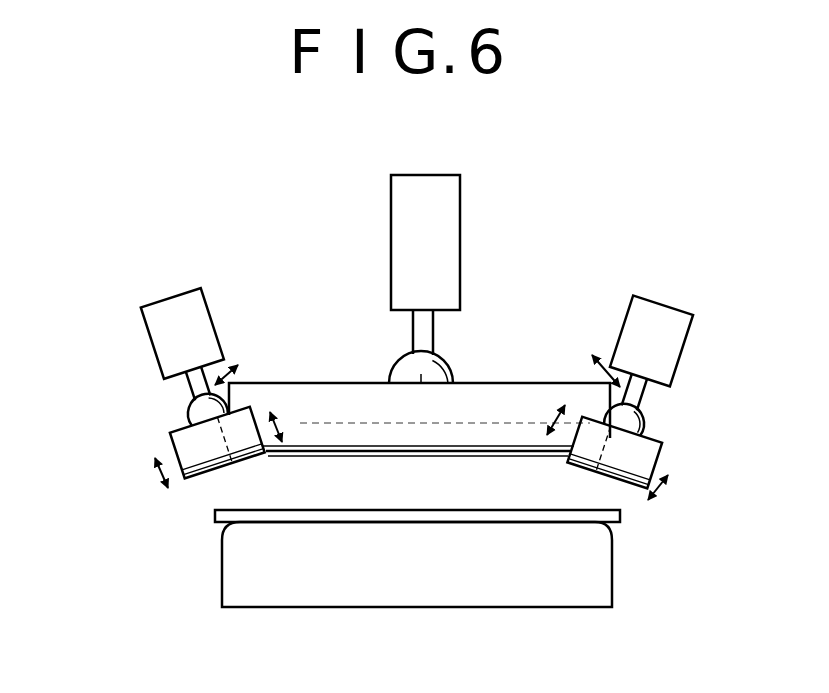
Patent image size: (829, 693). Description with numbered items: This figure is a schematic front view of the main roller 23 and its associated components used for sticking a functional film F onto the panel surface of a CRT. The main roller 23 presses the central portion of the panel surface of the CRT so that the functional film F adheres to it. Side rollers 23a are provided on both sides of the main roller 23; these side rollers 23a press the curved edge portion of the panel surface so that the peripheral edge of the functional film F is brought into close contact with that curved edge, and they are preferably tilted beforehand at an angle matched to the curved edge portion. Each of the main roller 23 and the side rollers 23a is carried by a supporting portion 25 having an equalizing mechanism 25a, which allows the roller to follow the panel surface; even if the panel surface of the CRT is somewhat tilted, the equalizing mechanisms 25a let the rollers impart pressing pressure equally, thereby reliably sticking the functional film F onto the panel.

The pressing cylinder 25 is at (438, 217).
The equalizing mechanism 25a is at (431, 368).
The main roller 23 is at (525, 407).
The side roller 23a is at (195, 437).
The functional film F is at (618, 516).
The element CRT is at (510, 590).